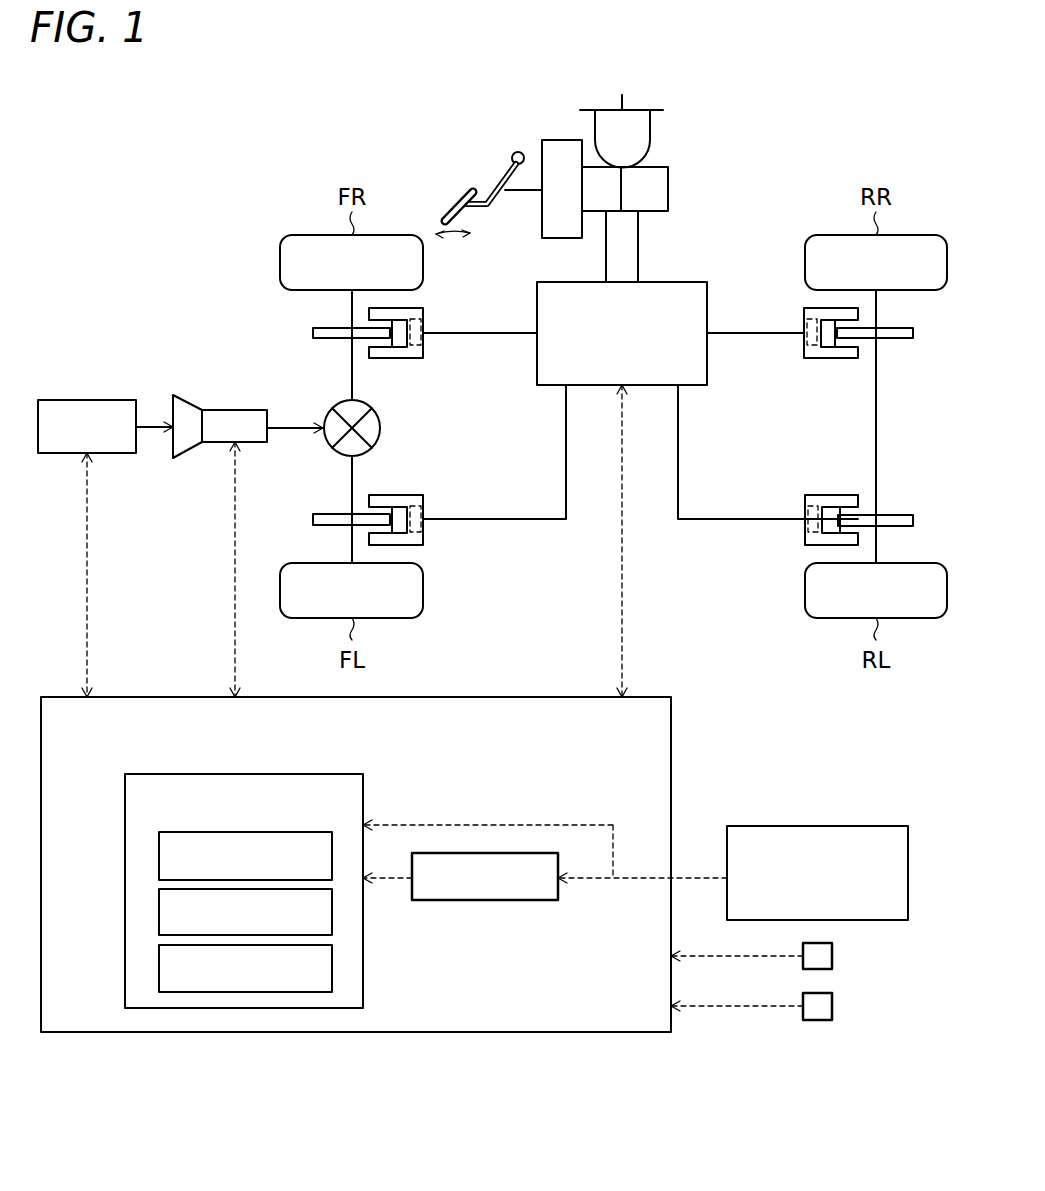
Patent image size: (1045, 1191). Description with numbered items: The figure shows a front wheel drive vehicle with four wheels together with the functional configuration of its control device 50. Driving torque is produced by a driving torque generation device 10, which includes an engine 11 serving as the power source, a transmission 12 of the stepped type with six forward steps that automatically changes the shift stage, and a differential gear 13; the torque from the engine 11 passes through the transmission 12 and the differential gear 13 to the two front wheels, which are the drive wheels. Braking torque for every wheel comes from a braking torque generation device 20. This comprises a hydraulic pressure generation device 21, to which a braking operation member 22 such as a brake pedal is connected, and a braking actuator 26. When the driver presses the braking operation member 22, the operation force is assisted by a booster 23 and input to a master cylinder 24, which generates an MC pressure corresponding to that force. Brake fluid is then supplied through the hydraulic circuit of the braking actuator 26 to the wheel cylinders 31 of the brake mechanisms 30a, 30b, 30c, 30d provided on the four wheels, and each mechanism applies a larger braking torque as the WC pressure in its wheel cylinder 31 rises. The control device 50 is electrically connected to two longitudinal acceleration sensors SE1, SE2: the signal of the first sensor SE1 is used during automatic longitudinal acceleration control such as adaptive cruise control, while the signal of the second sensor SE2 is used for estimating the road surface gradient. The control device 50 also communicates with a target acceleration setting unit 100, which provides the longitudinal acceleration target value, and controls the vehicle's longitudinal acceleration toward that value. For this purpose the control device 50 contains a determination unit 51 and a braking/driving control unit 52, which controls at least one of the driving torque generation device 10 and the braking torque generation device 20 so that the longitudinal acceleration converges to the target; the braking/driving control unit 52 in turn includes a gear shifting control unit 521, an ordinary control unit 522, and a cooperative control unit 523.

The driving torque generation device 10 is at (180, 435).
The engine 11 is at (70, 400).
The transmission 12 is at (230, 410).
The differential gear 13 is at (381, 428).
The braking torque generation device 20 is at (640, 307).
The hydraulic pressure generation device 21 is at (707, 130).
The braking operation member 22 is at (455, 200).
The booster 23 is at (565, 239).
The master cylinder 24 is at (668, 175).
The braking actuator 26 is at (667, 282).
The brake mechanism 30a is at (321, 503).
The brake mechanism 30b is at (317, 354).
The brake mechanism 30c is at (788, 489).
The brake mechanism 30d is at (785, 370).
The wheel cylinder 31 is at (425, 319).
The control device 50 is at (671, 725).
The determination unit 51 is at (505, 900).
The braking/driving control unit 52 is at (355, 774).
The gear shifting control unit 521 is at (159, 850).
The ordinary control unit 522 is at (159, 907).
The cooperative control unit 523 is at (159, 965).
The target acceleration setting unit 100 is at (815, 826).
The first longitudinal acceleration sensor SE1 is at (832, 956).
The second longitudinal acceleration sensor SE2 is at (832, 1006).